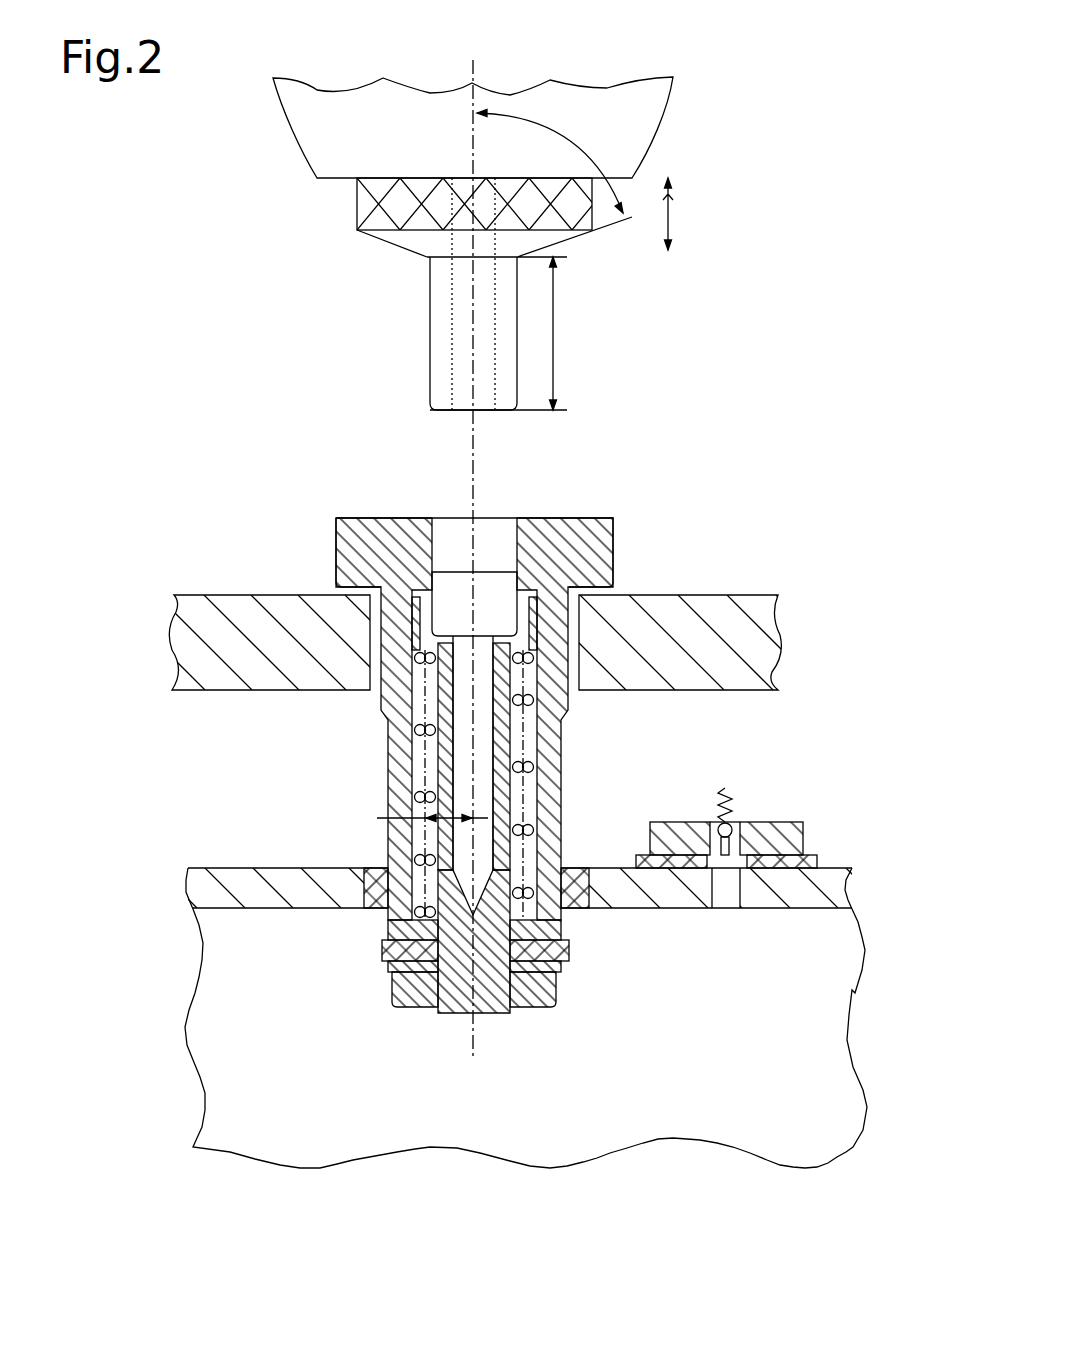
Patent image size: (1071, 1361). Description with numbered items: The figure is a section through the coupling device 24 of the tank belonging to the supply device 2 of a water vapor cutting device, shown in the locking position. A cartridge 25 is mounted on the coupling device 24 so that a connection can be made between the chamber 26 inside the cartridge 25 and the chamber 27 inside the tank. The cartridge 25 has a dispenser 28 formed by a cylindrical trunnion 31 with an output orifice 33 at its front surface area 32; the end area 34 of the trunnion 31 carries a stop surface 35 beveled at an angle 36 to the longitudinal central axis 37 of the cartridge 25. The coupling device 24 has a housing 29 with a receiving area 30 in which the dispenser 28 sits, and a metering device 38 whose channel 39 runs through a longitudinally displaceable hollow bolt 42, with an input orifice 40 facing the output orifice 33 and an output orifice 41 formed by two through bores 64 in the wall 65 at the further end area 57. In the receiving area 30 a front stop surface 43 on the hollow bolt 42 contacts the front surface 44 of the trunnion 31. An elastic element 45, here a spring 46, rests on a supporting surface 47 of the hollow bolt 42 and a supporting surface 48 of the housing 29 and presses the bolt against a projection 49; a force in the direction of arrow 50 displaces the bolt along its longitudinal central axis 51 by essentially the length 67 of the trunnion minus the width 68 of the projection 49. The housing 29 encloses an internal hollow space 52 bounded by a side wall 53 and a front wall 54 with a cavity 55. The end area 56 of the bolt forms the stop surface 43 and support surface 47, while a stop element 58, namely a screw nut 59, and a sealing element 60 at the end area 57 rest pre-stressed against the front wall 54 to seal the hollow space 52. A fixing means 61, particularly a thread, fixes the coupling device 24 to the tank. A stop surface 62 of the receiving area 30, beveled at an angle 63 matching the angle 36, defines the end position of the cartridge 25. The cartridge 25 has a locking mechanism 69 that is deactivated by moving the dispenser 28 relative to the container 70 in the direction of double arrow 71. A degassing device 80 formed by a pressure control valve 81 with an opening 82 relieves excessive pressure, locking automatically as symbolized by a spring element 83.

The supply device 2 is at (215, 433).
The coupling device 24 is at (702, 545).
The cartridge 25 is at (707, 87).
The chamber inside the cartridge 26 is at (350, 133).
The chamber inside the tank 27 is at (253, 997).
The dispenser 28 is at (652, 323).
The housing 29 is at (350, 510).
The receiving area 30 is at (372, 534).
The cylindrical trunnion 31 is at (433, 282).
The front surface area 32 is at (507, 437).
The output orifice 33 is at (462, 405).
The end area 34 is at (608, 243).
The stop surface 35 is at (394, 244).
The angle 36 is at (578, 147).
The longitudinal central axis 37 is at (468, 150).
The metering device 38 is at (592, 497).
The channel 39 is at (461, 680).
The input orifice 40 is at (461, 638).
The output orifice 41 is at (527, 870).
The hollow bolt 42 is at (460, 1012).
The front stop surface 43 is at (362, 683).
The front surface 44 is at (480, 413).
The elastic element 45 is at (416, 885).
The spring 46 is at (440, 883).
The supporting surface 47 is at (408, 607).
The supporting surface 48 is at (389, 918).
The projection 49 is at (420, 582).
The arrow 50 is at (473, 577).
The longitudinal central axis 51 is at (477, 732).
The internal hollow space 52 is at (560, 665).
The side wall 53 is at (553, 788).
The front wall 54 is at (555, 929).
The cavity 55 is at (540, 982).
The end area 56 is at (385, 605).
The further end area 57 is at (589, 902).
The stop element 58 is at (550, 1018).
The screw nut 59 is at (520, 1000).
The sealing element 60 is at (416, 1000).
The fixing means 61 is at (428, 660).
The stop surface 62 is at (556, 556).
The angle 63 is at (547, 553).
The through bores 64 is at (351, 881).
The wall 65 is at (382, 815).
The length of the trunnion 67 is at (557, 350).
The width of the projection 68 is at (540, 673).
The locking mechanism 69 is at (340, 193).
The container 70 is at (572, 110).
The double arrow 71 is at (681, 211).
The degassing device 80 is at (813, 783).
The pressure control valve 81 is at (803, 837).
The opening 82 is at (817, 858).
The spring element 83 is at (733, 790).